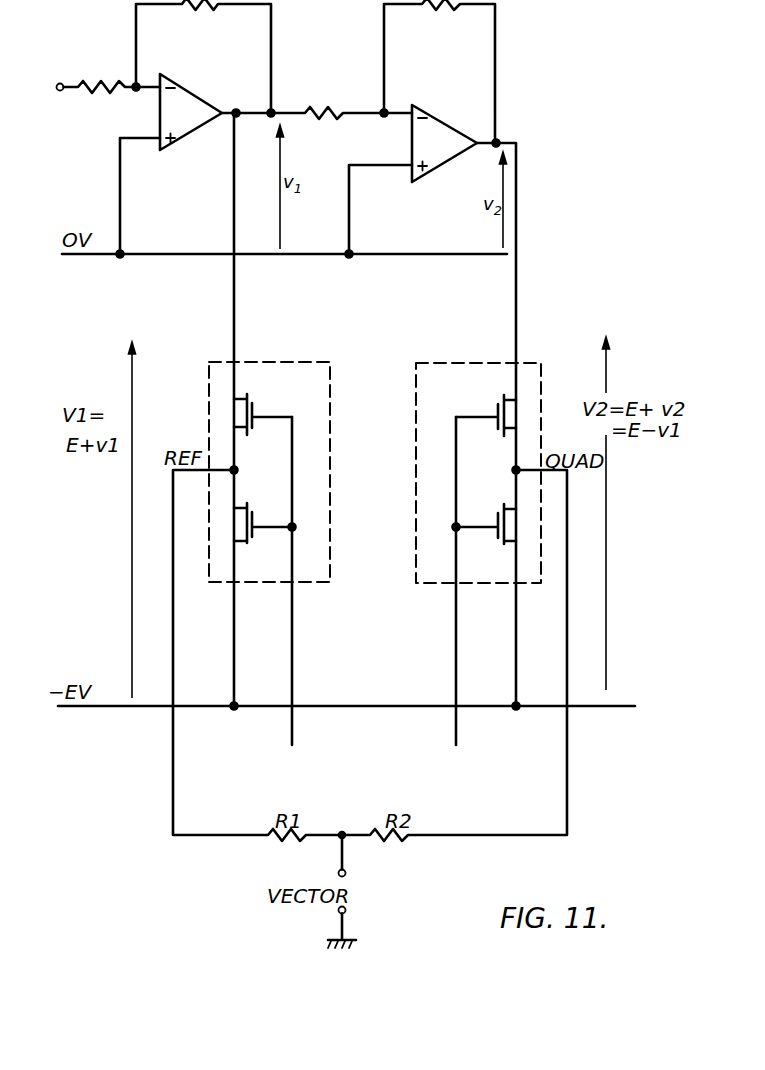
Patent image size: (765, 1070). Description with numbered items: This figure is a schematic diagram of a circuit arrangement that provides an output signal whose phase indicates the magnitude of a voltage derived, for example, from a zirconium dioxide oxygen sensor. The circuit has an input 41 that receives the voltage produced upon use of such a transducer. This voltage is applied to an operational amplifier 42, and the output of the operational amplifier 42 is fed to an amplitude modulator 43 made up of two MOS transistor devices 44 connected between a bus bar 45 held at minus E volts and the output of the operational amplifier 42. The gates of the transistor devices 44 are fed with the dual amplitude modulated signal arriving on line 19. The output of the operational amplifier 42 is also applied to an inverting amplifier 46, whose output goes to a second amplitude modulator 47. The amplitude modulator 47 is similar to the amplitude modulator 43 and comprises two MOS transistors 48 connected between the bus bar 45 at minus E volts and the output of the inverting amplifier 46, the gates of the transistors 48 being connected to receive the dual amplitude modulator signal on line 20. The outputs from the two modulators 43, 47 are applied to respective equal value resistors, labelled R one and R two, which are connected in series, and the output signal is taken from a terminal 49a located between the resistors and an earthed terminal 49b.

The input 41 is at (62, 85).
The operational amplifier 42 is at (206, 106).
The inverting amplifier 46 is at (450, 128).
The MOS transistor devices 44 is at (249, 401).
The amplitude modulator 43 is at (332, 492).
The MOS transistors 48 is at (503, 400).
The amplitude modulator 47 is at (416, 557).
The line 19 is at (292, 615).
The line 20 is at (455, 628).
The bus bar 45 is at (100, 703).
The terminal 49a is at (346, 875).
The earthed terminal 49b is at (346, 910).